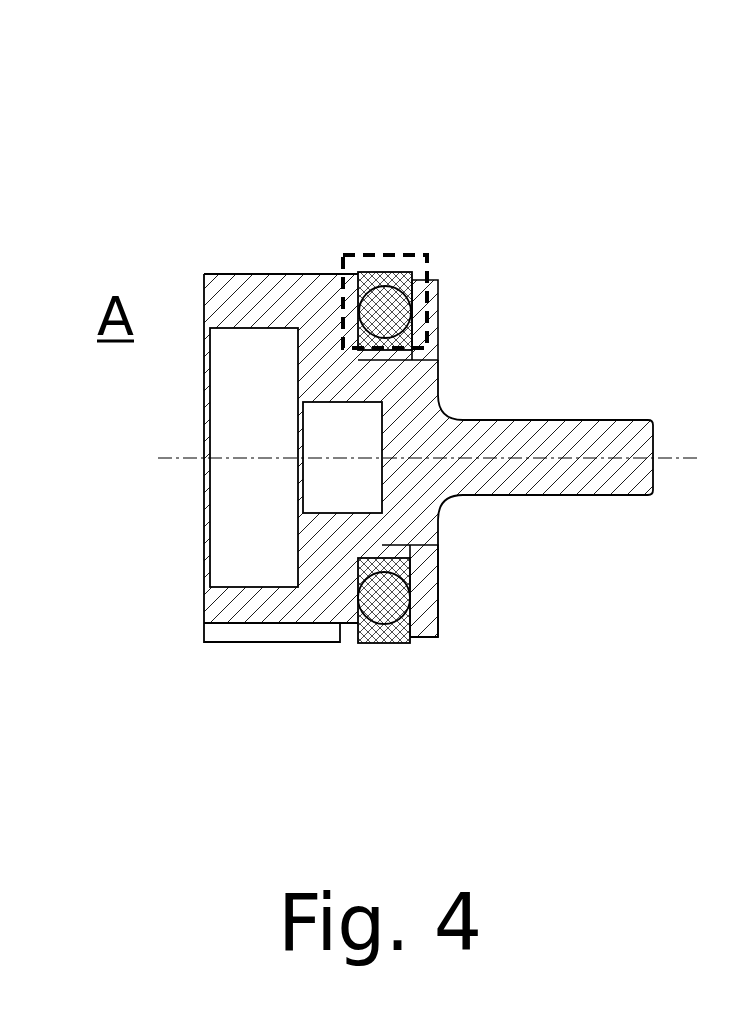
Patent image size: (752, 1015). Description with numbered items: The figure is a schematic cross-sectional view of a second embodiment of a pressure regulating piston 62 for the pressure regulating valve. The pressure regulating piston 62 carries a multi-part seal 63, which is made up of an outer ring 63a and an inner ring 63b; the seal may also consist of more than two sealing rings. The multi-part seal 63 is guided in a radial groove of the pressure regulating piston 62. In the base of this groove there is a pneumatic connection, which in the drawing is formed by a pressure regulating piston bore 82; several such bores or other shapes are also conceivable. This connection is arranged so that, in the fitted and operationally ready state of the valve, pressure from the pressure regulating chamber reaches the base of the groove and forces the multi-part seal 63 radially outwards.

The pressure regulating piston 62 is at (415, 423).
The multi-part seal 63 is at (385, 255).
The outer ring 63a is at (358, 275).
The inner ring 63b is at (370, 315).
The pressure regulating piston bore 82 is at (398, 557).